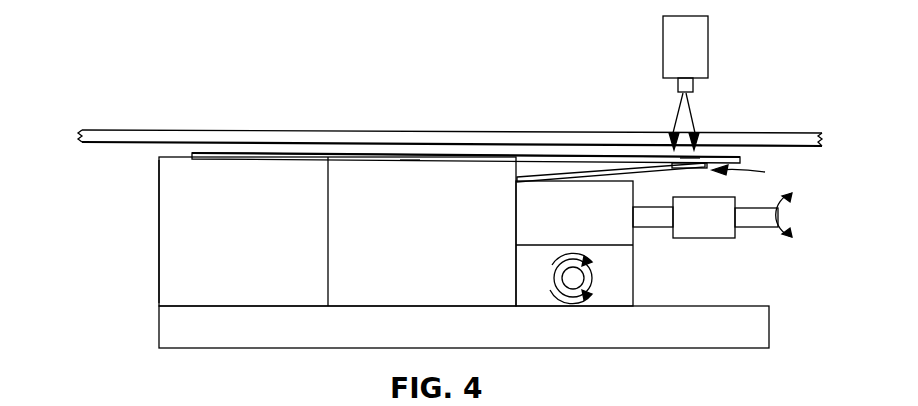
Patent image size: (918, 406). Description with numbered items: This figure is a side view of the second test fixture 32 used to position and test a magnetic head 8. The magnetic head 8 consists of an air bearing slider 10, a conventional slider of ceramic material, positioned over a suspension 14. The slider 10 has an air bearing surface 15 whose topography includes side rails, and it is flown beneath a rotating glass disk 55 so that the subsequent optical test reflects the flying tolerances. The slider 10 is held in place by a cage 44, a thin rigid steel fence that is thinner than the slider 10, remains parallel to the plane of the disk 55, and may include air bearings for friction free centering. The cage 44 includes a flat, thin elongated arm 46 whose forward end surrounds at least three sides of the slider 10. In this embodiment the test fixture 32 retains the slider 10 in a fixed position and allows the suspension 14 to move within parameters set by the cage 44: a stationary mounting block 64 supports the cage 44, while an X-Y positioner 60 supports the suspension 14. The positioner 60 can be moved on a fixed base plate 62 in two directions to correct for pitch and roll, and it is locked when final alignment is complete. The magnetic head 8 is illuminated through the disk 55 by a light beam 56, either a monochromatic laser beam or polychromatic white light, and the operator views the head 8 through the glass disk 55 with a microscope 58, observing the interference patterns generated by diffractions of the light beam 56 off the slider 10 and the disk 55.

The magnetic head 8 is at (747, 173).
The air bearing slider 10 is at (688, 168).
The suspension 14 is at (545, 177).
The air bearing surface 15 is at (690, 158).
The test fixture 32 is at (150, 233).
The cage 44 is at (408, 167).
The elongated arm 46 is at (363, 153).
The glass disk 55 is at (298, 130).
The light beam 56 is at (678, 104).
The microscope 58 is at (700, 46).
The X-Y positioner 60 is at (515, 264).
The base plate 62 is at (637, 337).
The stationary mounting block 64 is at (185, 266).